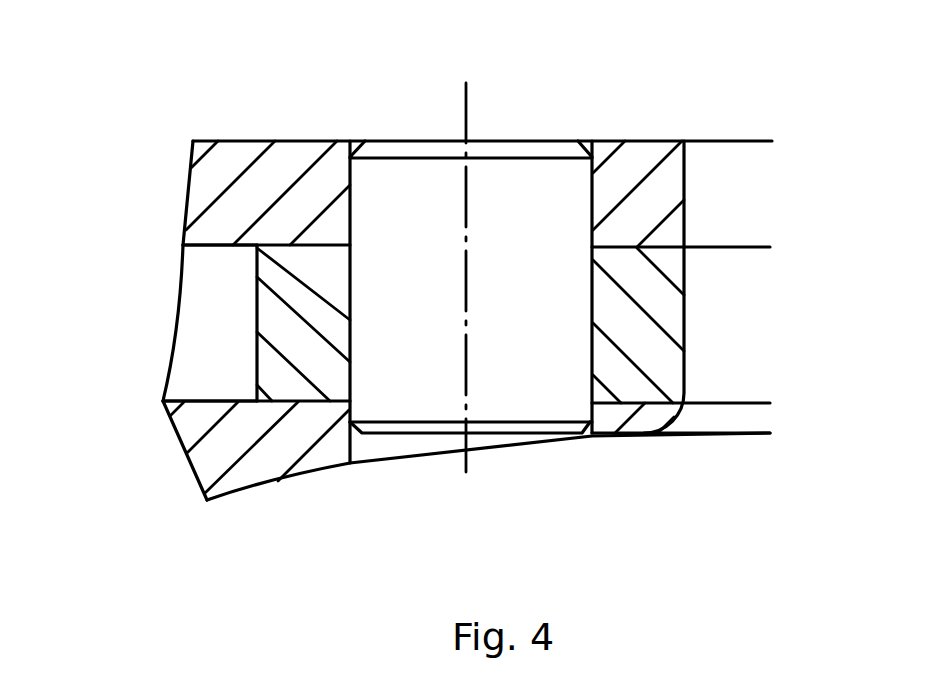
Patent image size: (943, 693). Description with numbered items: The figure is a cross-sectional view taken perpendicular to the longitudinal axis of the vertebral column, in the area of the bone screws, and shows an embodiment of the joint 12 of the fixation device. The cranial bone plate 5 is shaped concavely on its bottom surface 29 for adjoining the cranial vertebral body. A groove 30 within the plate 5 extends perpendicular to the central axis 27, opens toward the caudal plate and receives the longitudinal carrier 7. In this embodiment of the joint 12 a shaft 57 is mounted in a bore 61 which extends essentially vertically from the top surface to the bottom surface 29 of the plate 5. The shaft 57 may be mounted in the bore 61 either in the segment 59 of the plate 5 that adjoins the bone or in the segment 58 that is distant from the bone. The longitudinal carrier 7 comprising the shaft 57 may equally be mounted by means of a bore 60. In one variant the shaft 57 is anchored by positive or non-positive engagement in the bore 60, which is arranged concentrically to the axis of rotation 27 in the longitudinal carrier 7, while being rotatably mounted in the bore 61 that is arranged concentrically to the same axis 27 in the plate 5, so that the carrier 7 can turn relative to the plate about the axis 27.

The joint 12 is at (594, 104).
The cranial bone plate 5 is at (213, 453).
The longitudinal carrier 7 is at (663, 308).
The central axis 27 is at (468, 105).
The bottom surface 29 is at (287, 480).
The groove 30 is at (205, 363).
The shaft 57 is at (417, 197).
The segment distant from the bone 58 is at (778, 147).
The segment adjoining the bone 59 is at (778, 405).
The bore 60 is at (345, 320).
The bore 61 is at (388, 447).